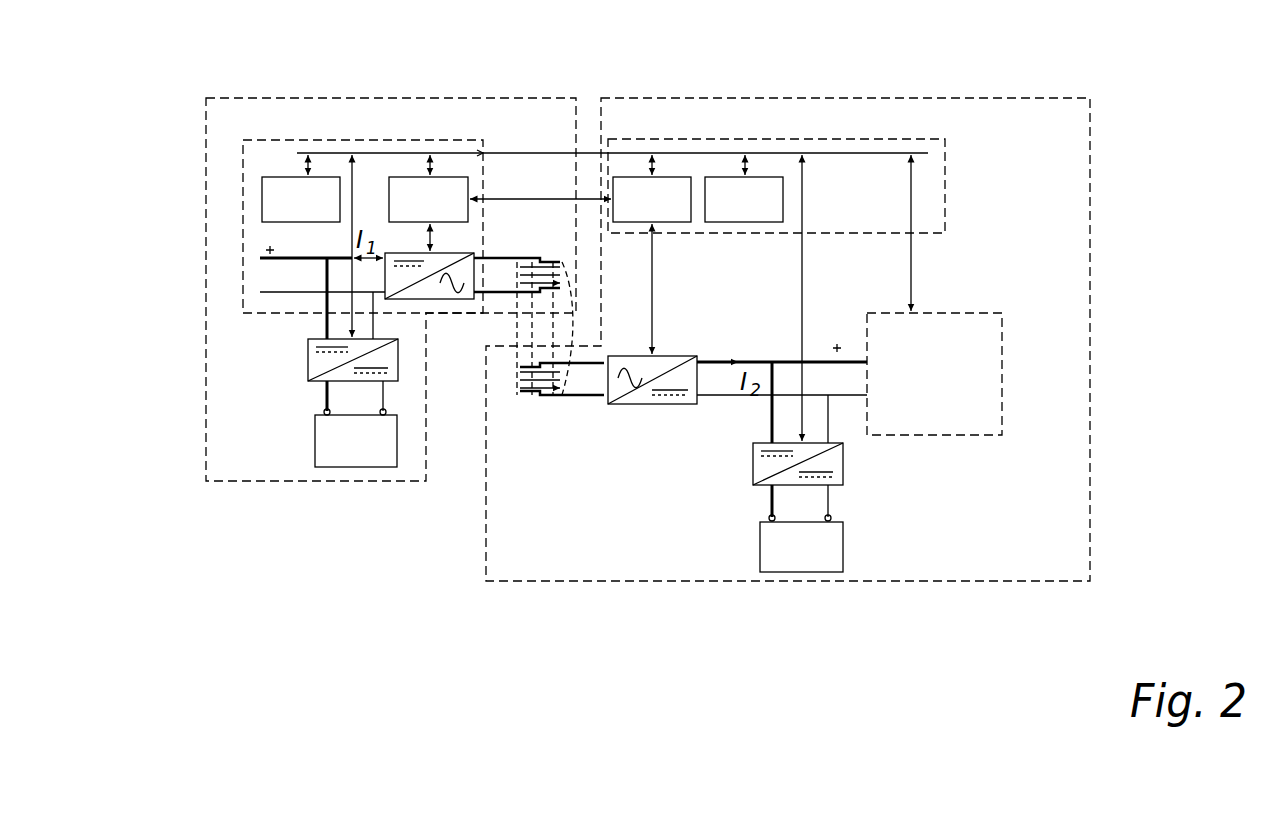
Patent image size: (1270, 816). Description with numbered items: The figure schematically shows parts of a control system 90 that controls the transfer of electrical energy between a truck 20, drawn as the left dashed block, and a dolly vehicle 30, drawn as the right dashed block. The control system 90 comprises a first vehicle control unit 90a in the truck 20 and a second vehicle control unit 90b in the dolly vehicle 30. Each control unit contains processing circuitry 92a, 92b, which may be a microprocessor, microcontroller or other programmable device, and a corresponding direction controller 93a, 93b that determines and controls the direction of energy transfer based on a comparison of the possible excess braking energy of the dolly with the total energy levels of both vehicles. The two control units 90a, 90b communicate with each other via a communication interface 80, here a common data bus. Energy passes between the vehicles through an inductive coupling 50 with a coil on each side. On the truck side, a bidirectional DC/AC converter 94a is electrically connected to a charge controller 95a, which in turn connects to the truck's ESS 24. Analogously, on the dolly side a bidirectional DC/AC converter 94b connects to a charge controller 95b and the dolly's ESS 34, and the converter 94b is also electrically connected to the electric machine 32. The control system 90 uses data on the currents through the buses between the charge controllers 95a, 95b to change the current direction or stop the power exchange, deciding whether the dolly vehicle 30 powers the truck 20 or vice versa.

The truck 20 is at (170, 108).
The ESS 24 is at (335, 467).
The dolly vehicle 30 is at (1090, 173).
The electric machine 32 is at (1002, 360).
The ESS 34 is at (843, 540).
The inductive coupling 50 is at (571, 320).
The communication interface 80 is at (583, 152).
The control system 90 is at (537, 163).
The first vehicle control unit 90a is at (243, 150).
The second vehicle control unit 90b is at (883, 139).
The processing circuitry 92a is at (322, 177).
The processing circuitry 92b is at (770, 177).
The direction controller 93a is at (445, 177).
The direction controller 93b is at (665, 177).
The bidirectional DC/AC converter 94a is at (460, 299).
The bidirectional DC/AC converter 94b is at (625, 404).
The charge controller 95a is at (308, 372).
The charge controller 95b is at (843, 460).